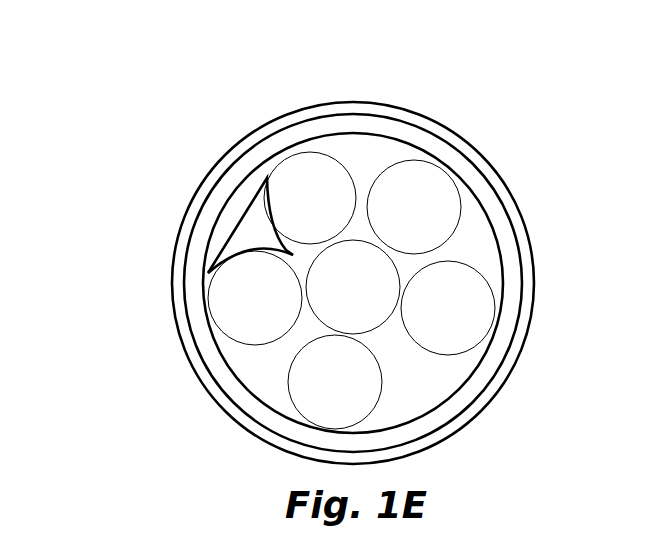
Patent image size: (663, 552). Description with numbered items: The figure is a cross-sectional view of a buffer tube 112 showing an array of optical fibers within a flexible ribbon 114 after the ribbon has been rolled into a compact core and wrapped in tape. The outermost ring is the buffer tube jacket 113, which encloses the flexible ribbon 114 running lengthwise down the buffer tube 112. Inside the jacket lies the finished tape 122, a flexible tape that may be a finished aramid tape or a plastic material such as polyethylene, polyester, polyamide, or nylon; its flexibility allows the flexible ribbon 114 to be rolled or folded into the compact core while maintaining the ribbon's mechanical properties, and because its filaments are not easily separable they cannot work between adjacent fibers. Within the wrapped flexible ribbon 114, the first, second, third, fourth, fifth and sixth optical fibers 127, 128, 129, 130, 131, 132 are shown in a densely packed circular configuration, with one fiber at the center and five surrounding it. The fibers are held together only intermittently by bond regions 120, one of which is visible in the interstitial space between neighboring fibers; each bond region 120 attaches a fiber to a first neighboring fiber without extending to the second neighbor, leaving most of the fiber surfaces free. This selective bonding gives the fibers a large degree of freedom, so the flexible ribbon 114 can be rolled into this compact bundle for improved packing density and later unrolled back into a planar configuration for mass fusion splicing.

The buffer tube 112 is at (228, 74).
The buffer tube jacket 113 is at (304, 113).
The finished tape 122 is at (437, 137).
The flexible ribbon 114 is at (206, 283).
The bond region 120 is at (238, 235).
The first optical fiber 127 is at (230, 308).
The second optical fiber 128 is at (292, 210).
The third optical fiber 129 is at (398, 210).
The fourth optical fiber 130 is at (430, 313).
The fifth optical fiber 131 is at (318, 395).
The sixth optical fiber 132 is at (337, 288).